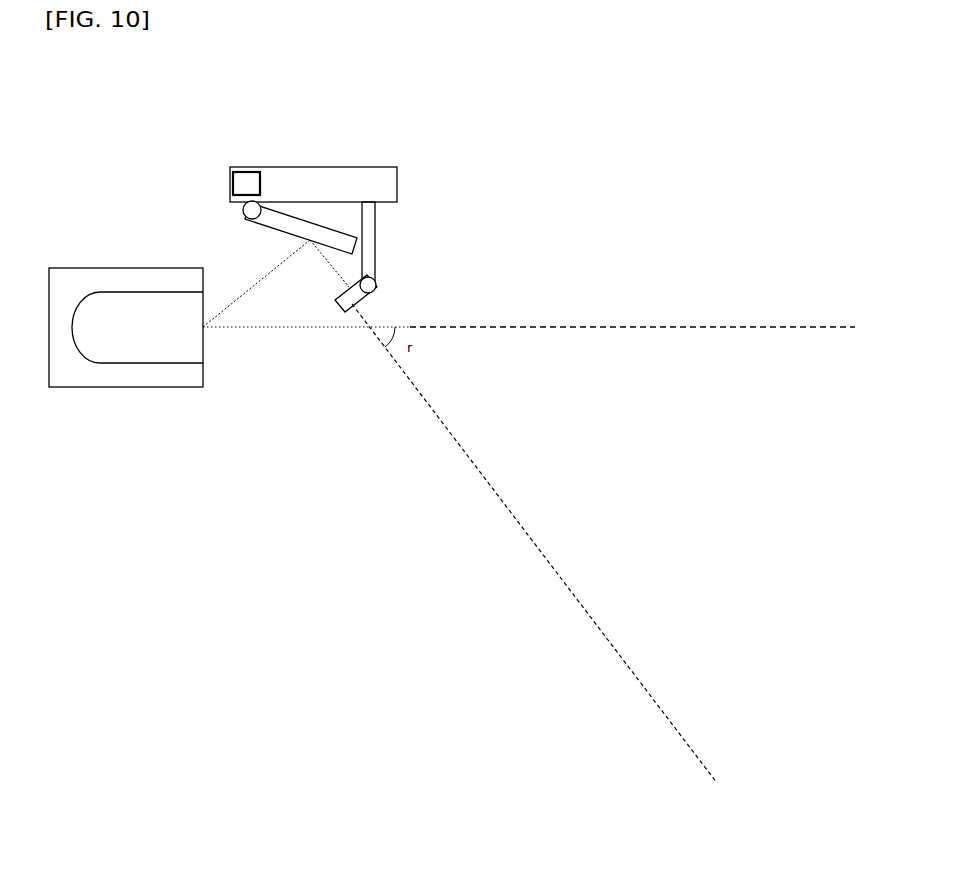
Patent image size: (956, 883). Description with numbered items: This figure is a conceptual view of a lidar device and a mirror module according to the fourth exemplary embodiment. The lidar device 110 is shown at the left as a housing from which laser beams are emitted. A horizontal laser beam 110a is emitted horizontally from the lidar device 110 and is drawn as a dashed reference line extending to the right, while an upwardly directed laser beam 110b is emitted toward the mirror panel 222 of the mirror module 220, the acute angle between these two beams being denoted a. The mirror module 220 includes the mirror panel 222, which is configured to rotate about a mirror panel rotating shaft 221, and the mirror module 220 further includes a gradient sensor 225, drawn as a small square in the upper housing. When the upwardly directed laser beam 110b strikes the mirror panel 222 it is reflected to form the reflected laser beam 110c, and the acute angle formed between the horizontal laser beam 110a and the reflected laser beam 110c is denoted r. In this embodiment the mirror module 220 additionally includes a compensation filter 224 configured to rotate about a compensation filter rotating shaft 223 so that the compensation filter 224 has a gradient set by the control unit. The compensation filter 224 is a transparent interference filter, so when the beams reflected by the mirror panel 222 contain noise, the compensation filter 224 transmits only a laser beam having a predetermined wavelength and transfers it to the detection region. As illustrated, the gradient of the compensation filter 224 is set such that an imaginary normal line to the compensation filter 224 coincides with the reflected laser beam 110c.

The lidar device 110 is at (90, 255).
The horizontal laser beam 110a is at (567, 325).
The upwardly directed laser beam 110b is at (237, 300).
The reflected laser beam 110c is at (475, 463).
The mirror module 220 is at (324, 230).
The mirror panel rotating shaft 221 is at (230, 200).
The mirror panel 222 is at (250, 219).
The compensation filter rotating shaft 223 is at (377, 283).
The compensation filter 224 is at (345, 313).
The gradient sensor 225 is at (245, 167).